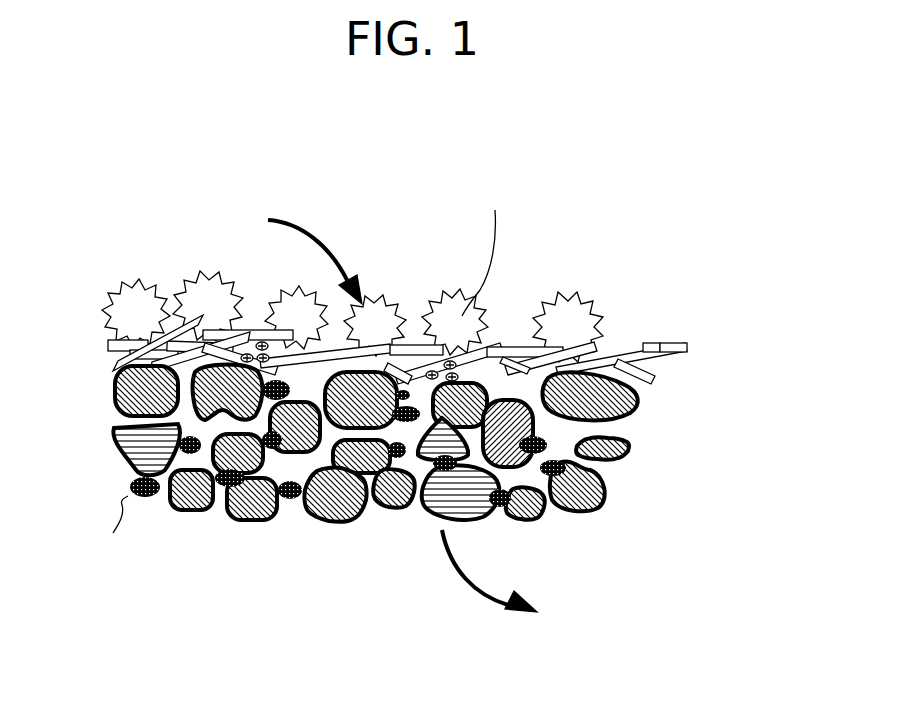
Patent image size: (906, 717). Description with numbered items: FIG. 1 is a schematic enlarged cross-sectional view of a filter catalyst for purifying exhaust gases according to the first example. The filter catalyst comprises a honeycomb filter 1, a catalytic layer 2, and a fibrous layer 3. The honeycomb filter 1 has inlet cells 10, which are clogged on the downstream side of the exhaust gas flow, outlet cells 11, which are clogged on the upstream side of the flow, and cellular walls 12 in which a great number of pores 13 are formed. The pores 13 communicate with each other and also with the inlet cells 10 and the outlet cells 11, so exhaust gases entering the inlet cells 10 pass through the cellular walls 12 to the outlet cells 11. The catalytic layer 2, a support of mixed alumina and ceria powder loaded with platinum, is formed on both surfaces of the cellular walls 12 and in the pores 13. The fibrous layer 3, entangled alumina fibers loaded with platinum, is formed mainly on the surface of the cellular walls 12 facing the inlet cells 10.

The honeycomb filter 1 is at (92, 388).
The catalytic layer 2 is at (310, 512).
The fibrous layer 3 is at (623, 352).
The inlet cells 10 is at (430, 278).
The outlet cells 11 is at (430, 569).
The cellular walls 12 is at (653, 386).
The pores 13 is at (588, 458).